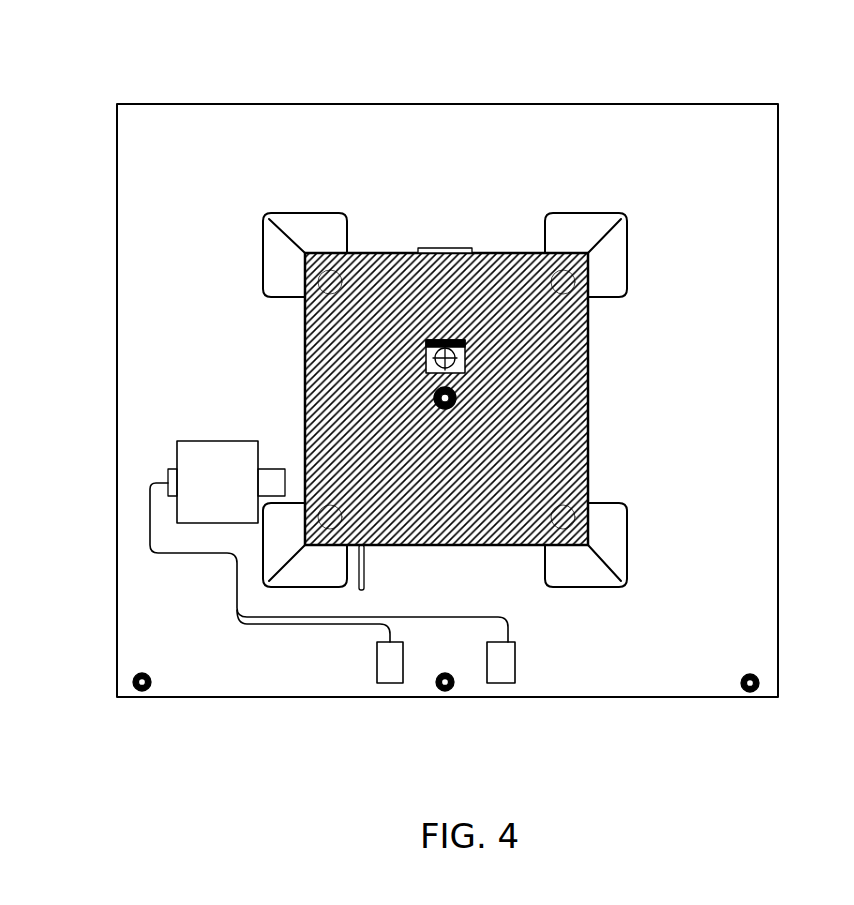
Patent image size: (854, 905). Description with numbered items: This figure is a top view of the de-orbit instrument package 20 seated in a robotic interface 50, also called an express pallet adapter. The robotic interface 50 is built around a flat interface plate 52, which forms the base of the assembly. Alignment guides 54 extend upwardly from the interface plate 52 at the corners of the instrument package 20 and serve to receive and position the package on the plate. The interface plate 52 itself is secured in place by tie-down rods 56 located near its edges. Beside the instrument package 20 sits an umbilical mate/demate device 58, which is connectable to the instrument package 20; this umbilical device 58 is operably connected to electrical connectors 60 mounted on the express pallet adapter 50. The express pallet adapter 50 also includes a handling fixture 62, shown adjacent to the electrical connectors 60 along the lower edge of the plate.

The instrument package 20 is at (562, 408).
The robotic interface 50 is at (627, 70).
The interface plate 52 is at (243, 675).
The alignment guides 54 is at (305, 222).
The tie-down rods 56 is at (142, 692).
The umbilical mate/demate device 58 is at (198, 460).
The electrical connectors 60 is at (387, 675).
The handling fixture 62 is at (445, 692).